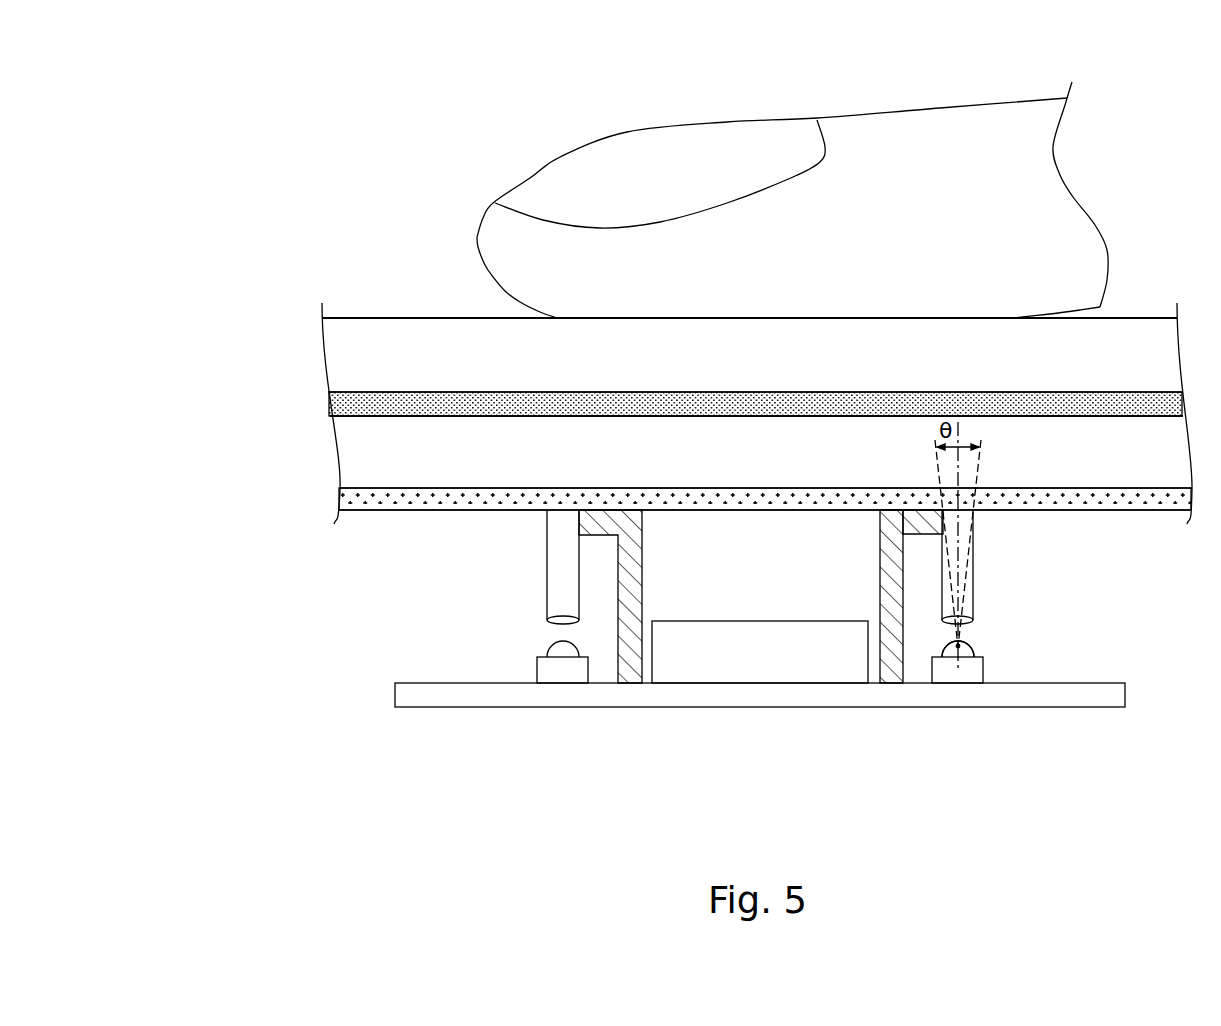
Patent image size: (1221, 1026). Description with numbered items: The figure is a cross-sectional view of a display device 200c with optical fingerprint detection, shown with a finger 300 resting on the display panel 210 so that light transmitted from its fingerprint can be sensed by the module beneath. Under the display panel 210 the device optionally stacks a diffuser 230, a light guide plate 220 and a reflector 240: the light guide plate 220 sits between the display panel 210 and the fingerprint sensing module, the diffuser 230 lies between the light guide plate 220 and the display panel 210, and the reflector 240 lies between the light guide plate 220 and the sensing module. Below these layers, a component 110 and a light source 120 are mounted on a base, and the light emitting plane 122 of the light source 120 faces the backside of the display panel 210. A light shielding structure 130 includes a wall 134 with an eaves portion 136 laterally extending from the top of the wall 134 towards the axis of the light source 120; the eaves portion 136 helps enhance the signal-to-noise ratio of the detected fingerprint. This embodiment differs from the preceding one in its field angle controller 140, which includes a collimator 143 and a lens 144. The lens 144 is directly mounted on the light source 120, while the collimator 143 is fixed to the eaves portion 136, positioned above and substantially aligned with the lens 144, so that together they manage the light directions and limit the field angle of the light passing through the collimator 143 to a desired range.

The display device 200c is at (253, 38).
The finger 300 is at (895, 132).
The display panel 210 is at (335, 355).
The diffuser 230 is at (340, 402).
The light guide plate 220 is at (355, 455).
The reflector 240 is at (358, 495).
The circuit component 110 is at (703, 672).
The light shielding structure 130 is at (856, 596).
The eaves portion 136 is at (928, 525).
The wall 134 is at (895, 587).
The field angle controller 140 is at (1021, 646).
The collimator 143 is at (960, 607).
The lens 144 is at (957, 650).
The light source 120 is at (950, 673).
The light emitting plane 122 is at (970, 657).